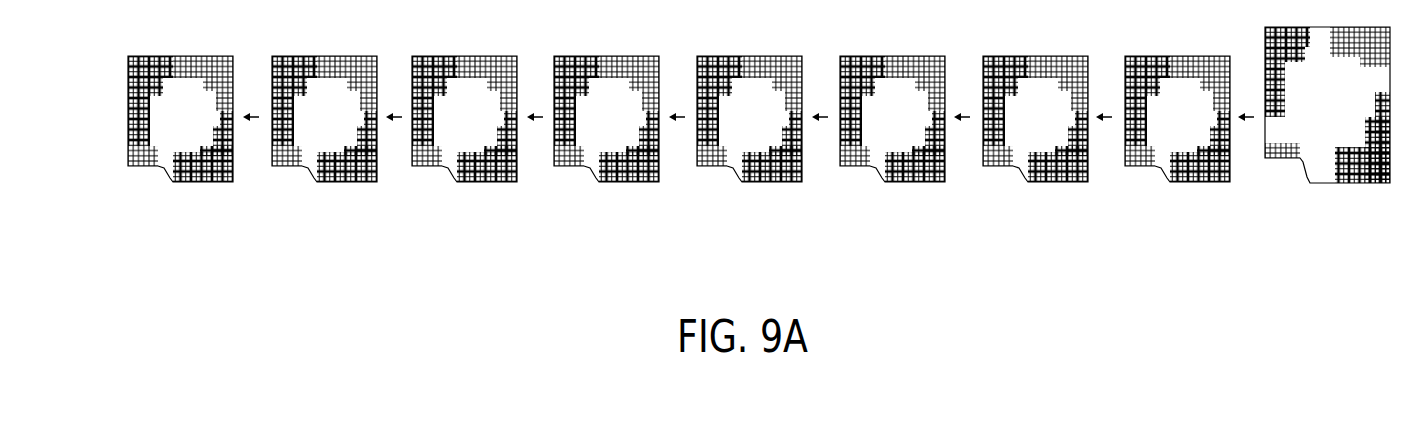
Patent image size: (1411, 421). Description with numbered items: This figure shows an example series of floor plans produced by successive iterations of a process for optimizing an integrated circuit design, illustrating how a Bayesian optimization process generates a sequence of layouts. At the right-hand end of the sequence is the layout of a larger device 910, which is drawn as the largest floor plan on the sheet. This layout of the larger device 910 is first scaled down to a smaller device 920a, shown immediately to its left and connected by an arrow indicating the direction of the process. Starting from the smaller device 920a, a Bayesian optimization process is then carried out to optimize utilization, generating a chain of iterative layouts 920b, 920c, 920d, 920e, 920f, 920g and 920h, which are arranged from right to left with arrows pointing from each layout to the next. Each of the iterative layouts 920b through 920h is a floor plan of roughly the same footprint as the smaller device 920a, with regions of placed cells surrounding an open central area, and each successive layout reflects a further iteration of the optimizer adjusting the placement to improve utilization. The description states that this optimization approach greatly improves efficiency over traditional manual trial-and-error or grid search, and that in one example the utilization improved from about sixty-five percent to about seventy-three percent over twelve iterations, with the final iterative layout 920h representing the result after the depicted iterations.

The layout of a larger device 910 is at (1316, 153).
The smaller device 920a is at (1157, 167).
The iterative layout 920b is at (1022, 167).
The iterative layout 920c is at (874, 167).
The iterative layout 920d is at (734, 167).
The iterative layout 920e is at (587, 167).
The iterative layout 920f is at (440, 167).
The iterative layout 920g is at (303, 167).
The iterative layout 920h is at (155, 167).